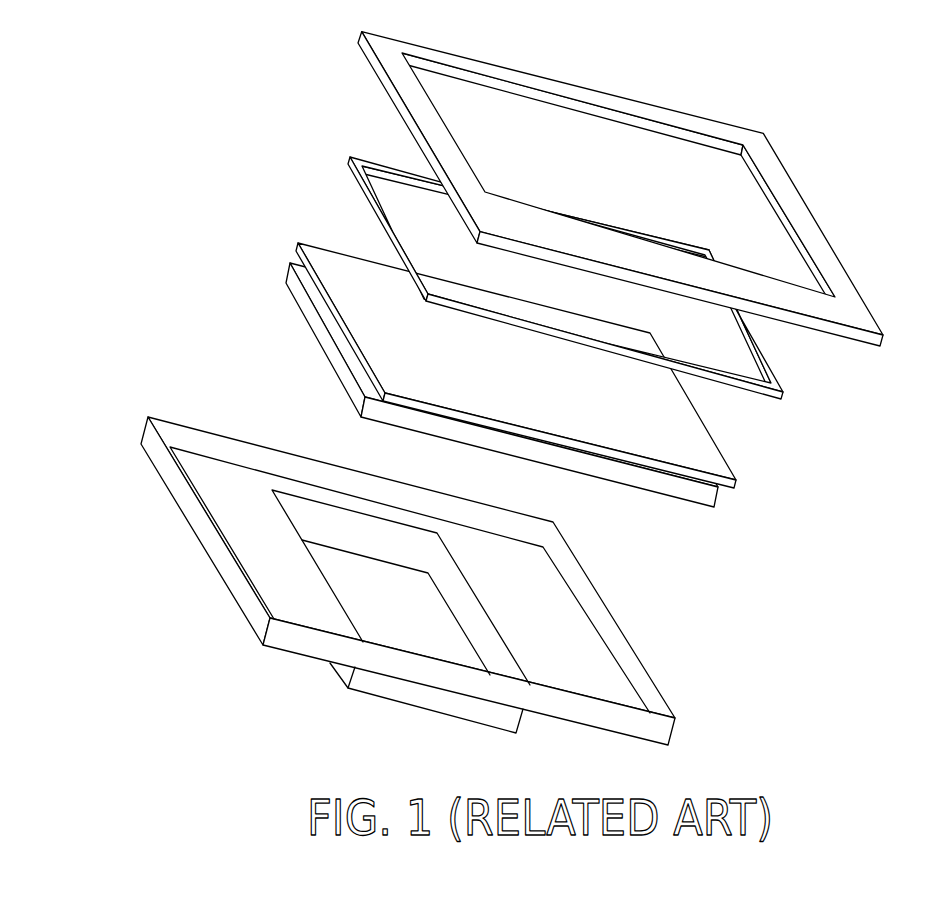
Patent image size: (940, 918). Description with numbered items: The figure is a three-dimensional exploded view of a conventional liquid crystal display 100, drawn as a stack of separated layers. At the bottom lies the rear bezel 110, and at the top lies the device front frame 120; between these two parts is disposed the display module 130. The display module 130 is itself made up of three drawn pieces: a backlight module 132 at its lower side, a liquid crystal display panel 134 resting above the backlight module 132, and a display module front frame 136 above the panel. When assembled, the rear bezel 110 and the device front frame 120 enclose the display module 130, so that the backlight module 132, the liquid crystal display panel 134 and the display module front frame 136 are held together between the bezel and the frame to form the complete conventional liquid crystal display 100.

The liquid crystal display 100 is at (537, 401).
The rear bezel 110 is at (636, 651).
The device front frame 120 is at (790, 178).
The display module 130 is at (610, 339).
The backlight module 132 is at (708, 500).
The liquid crystal display panel 134 is at (707, 433).
The display module front frame 136 is at (738, 391).